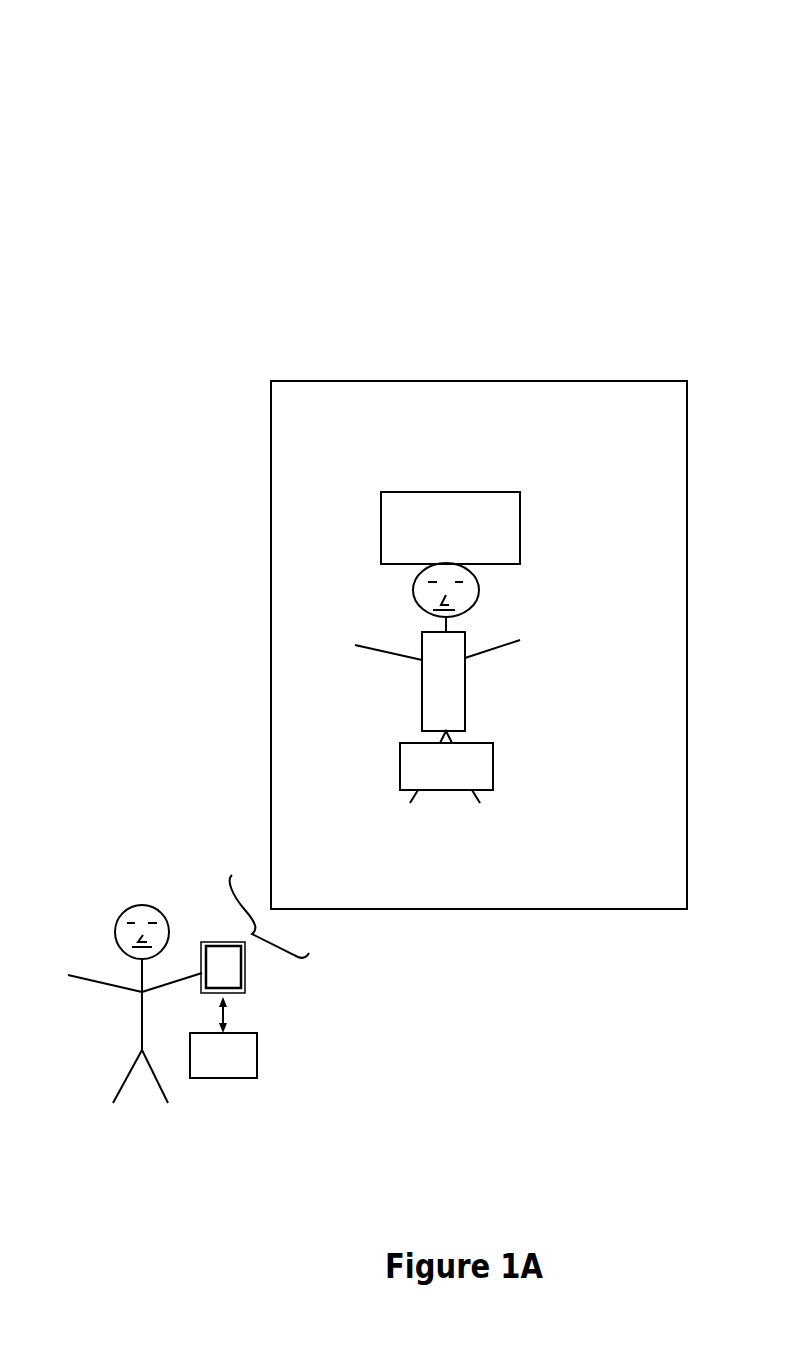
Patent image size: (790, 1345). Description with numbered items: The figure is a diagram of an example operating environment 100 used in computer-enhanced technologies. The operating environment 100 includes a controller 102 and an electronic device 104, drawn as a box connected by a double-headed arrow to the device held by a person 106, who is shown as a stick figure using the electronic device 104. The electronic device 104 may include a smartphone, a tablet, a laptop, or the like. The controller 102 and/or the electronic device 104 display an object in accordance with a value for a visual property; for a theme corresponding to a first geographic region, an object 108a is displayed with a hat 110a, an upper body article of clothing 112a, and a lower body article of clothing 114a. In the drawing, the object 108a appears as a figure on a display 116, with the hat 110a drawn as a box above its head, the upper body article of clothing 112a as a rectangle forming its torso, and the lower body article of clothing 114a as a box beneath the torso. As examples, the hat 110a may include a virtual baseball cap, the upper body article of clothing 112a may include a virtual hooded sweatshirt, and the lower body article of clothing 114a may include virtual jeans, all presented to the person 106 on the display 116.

The operating environment 100 is at (126, 59).
The controller 102 is at (243, 1066).
The electronic device 104 is at (245, 987).
The person 106 is at (122, 1087).
The object 108a is at (407, 622).
The hat 110a is at (426, 538).
The upper body article of clothing 112a is at (430, 711).
The lower body article of clothing 114a is at (421, 780).
The display 116 is at (399, 415).